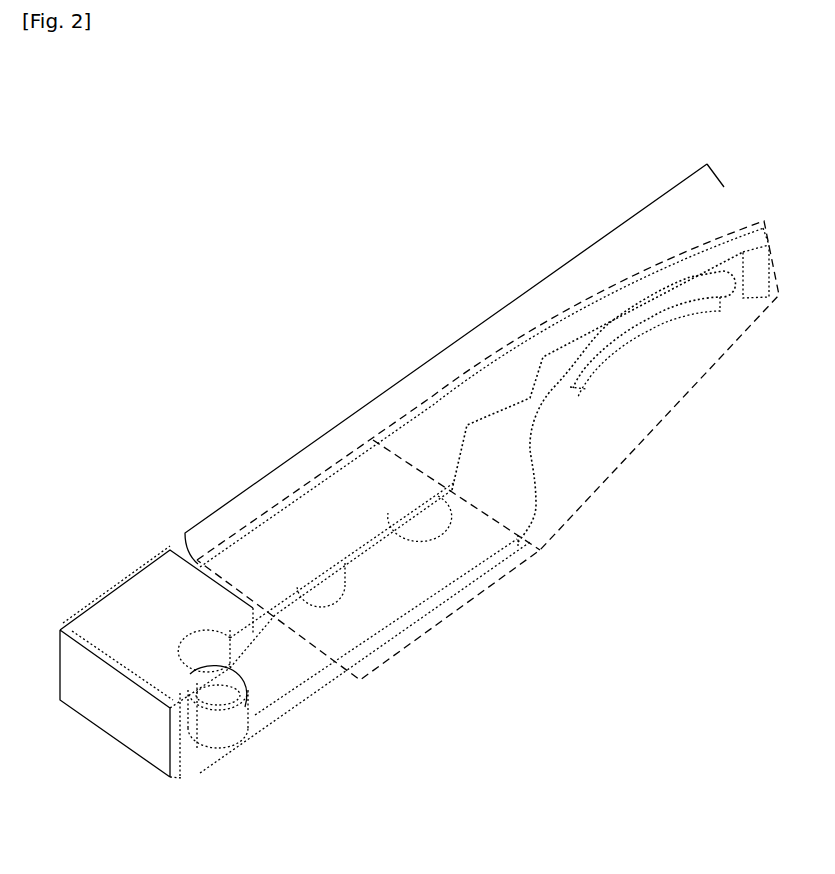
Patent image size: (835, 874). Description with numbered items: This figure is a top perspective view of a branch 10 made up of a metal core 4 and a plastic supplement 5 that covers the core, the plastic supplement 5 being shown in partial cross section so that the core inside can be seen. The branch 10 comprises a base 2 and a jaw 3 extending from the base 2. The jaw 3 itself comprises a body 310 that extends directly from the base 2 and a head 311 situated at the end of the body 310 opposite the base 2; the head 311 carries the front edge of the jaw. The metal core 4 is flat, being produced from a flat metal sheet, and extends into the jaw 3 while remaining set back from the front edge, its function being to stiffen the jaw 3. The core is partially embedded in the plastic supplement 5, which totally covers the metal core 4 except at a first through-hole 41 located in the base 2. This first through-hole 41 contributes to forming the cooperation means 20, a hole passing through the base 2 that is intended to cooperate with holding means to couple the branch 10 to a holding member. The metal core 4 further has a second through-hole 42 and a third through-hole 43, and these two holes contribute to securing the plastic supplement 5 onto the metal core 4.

The base 2 is at (50, 630).
The jaw 3 is at (333, 427).
The metal core 4 is at (311, 700).
The plastic supplement 5 is at (160, 773).
The branch 10 is at (249, 824).
The cooperation means 20 is at (191, 672).
The first through-hole 41 is at (245, 707).
The second through-hole 42 is at (351, 588).
The third through-hole 43 is at (447, 520).
The body 310 is at (492, 588).
The head 311 is at (575, 520).